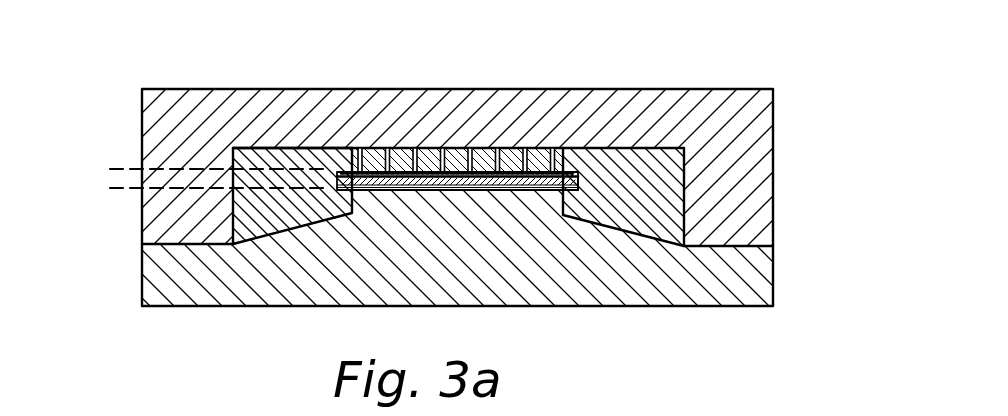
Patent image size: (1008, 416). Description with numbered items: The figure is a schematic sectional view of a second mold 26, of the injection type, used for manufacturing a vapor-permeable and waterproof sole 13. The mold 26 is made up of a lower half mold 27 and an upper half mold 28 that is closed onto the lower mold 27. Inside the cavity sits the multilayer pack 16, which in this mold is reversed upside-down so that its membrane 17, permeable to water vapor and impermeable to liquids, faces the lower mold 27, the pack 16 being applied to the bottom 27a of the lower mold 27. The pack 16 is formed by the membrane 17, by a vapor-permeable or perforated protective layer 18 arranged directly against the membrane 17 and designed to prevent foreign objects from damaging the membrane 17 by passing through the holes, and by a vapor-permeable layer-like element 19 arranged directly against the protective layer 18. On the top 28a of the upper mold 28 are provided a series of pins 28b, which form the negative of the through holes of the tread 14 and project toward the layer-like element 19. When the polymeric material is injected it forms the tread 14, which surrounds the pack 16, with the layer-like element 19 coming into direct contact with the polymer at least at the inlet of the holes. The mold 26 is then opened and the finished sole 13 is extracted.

The sole 13 is at (233, 215).
The tread 14 is at (647, 190).
The multilayer pack 16 is at (107, 168).
The membrane 17 is at (371, 192).
The protective layer 18 is at (578, 180).
The layer-like element 19 is at (378, 170).
The second mold 26 is at (781, 148).
The lower mold 27 is at (753, 275).
The bottom of the lower mold 27a is at (527, 193).
The upper mold 28 is at (590, 110).
The top of the upper mold 28a is at (295, 148).
The pins 28b is at (466, 165).